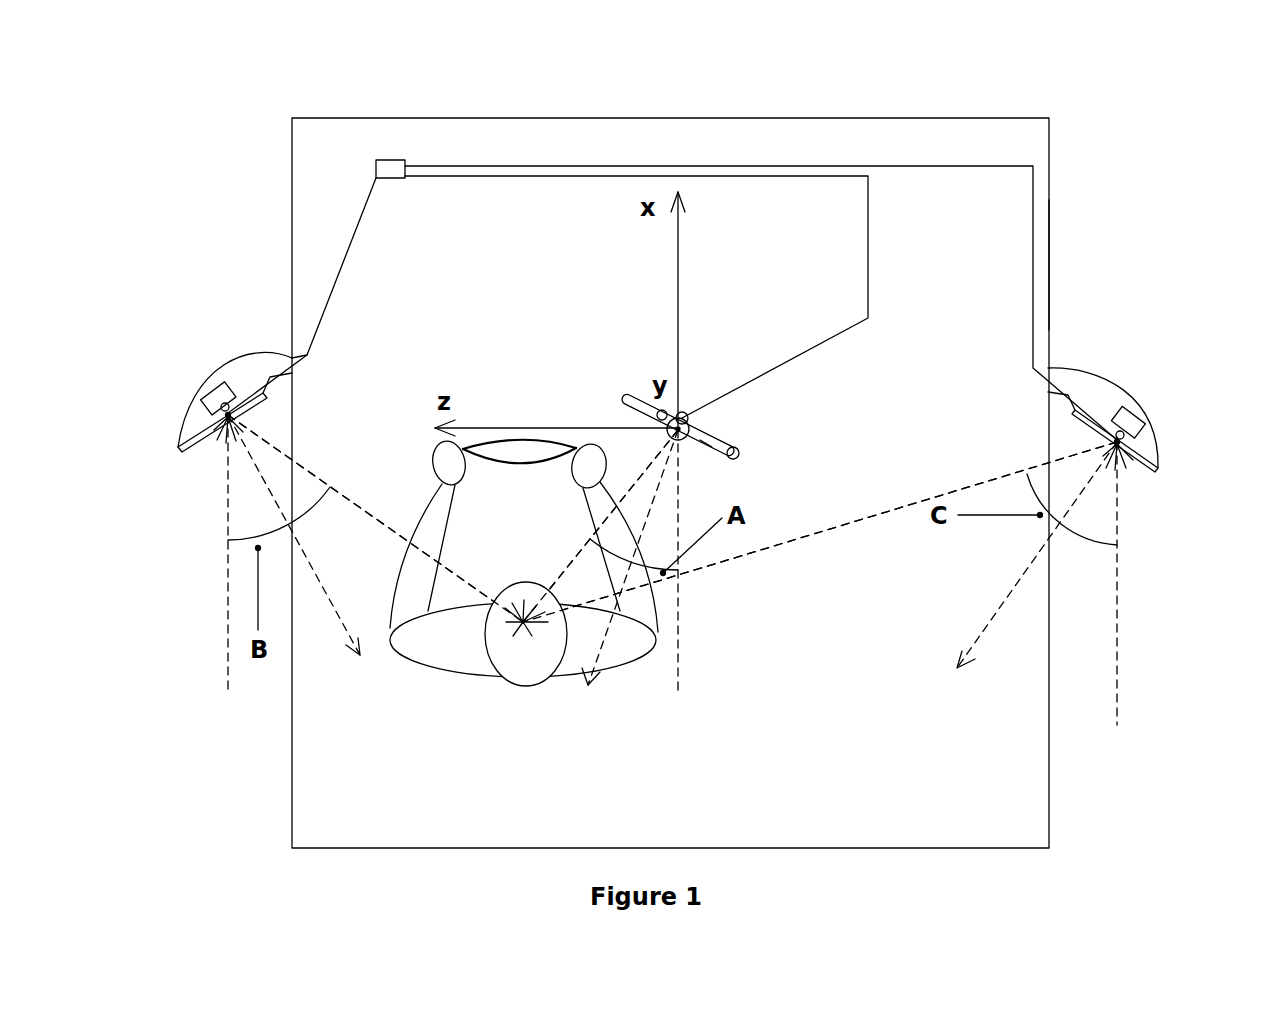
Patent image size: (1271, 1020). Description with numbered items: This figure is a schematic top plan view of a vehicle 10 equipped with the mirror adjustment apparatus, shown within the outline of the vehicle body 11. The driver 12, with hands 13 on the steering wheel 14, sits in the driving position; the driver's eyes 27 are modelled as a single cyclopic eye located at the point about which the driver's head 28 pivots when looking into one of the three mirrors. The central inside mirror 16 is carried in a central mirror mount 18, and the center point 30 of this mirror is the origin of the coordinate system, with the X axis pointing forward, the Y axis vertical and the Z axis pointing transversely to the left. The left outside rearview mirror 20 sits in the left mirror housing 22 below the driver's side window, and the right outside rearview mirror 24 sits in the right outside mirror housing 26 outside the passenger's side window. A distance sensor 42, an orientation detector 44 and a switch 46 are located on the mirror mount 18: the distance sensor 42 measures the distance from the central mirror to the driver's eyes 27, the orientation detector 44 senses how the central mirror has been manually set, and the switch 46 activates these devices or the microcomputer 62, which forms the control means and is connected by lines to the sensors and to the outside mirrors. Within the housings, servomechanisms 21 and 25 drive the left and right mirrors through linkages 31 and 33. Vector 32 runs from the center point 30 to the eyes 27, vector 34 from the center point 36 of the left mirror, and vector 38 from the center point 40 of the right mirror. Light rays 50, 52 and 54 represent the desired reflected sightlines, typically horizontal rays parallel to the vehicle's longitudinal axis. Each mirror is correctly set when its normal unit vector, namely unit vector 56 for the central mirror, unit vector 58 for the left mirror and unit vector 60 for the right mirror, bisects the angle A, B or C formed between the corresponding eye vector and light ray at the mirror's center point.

The vehicle 10 is at (1049, 265).
The frame 11 is at (673, 118).
The driver 12 is at (412, 660).
The hands 13 is at (442, 448).
The steering wheel 14 is at (530, 470).
The central inside mirror 16 is at (703, 447).
The central mirror mount 18 is at (630, 399).
The left outside rearview mirror 20 is at (188, 440).
The servomechanism 21 is at (217, 390).
The left mirror housing 22 is at (195, 387).
The right outside rearview mirror 24 is at (1148, 470).
The servomechanism 25 is at (1128, 413).
The right outside mirror housing 26 is at (1098, 375).
The driver's eyes 27 is at (523, 622).
The driver's head 28 is at (537, 683).
The center point of central mirror 30 is at (690, 428).
The linkage 31 is at (230, 411).
The vector 32 is at (580, 552).
The linkage 33 is at (1118, 437).
The vector 34 is at (302, 467).
The center point of left mirror 36 is at (226, 416).
The vector 38 is at (767, 549).
The center point of right mirror 40 is at (1122, 442).
The distance sensor 42 is at (660, 412).
The orientation detector 44 is at (684, 414).
The switch 46 is at (740, 452).
The light ray 50 is at (678, 659).
The light ray 52 is at (228, 650).
The light ray 54 is at (1117, 638).
The unit vector 56 is at (600, 647).
The unit vector 58 is at (267, 490).
The unit vector 60 is at (1005, 603).
The microcomputer 62 is at (390, 178).